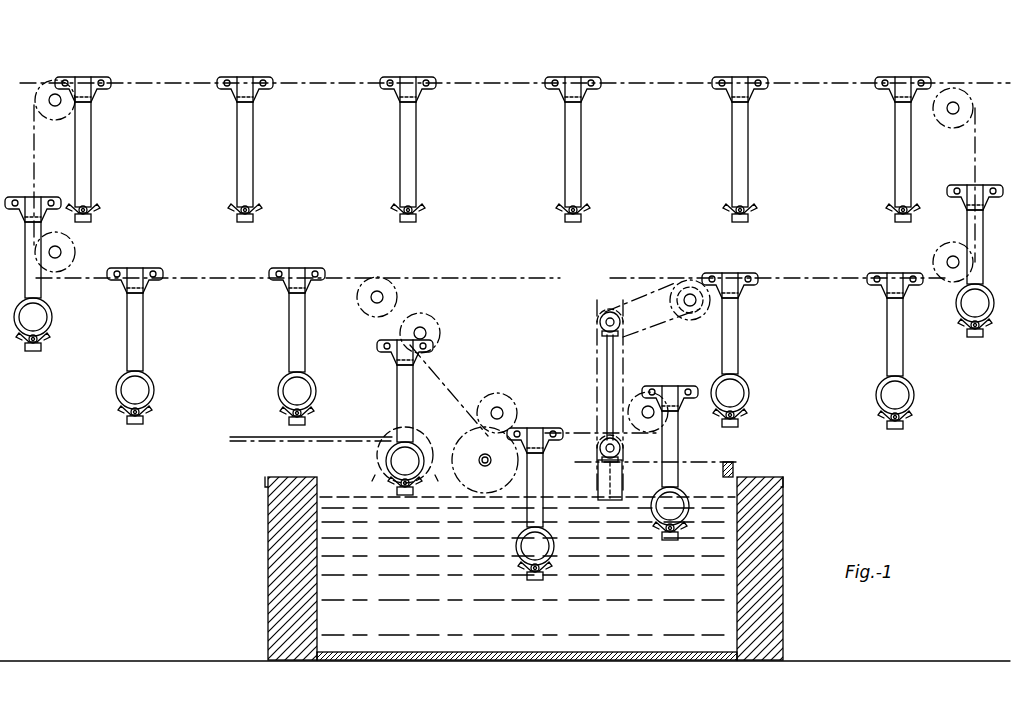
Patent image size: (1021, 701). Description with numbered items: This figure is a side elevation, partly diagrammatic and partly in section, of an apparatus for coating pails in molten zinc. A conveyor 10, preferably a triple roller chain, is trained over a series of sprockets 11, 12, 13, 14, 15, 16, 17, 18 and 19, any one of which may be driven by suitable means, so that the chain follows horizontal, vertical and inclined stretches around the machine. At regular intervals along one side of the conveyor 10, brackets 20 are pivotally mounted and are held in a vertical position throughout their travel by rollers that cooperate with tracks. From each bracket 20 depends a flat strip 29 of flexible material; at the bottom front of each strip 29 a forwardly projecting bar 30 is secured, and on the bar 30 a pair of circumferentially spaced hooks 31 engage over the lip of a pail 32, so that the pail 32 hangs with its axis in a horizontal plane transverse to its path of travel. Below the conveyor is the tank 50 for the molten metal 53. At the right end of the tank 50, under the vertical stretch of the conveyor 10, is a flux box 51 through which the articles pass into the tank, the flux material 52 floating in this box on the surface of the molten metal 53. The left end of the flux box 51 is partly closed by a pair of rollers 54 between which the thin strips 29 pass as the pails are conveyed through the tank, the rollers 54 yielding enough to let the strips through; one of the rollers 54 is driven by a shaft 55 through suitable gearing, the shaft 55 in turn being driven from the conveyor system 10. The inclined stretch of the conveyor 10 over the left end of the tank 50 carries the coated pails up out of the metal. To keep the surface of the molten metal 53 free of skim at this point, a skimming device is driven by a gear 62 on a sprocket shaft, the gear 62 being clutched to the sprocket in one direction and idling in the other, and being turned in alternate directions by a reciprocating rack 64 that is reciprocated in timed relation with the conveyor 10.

The conveyor 10 is at (662, 82).
The sprocket 11 is at (957, 90).
The sprocket 12 is at (946, 278).
The sprocket 13 is at (684, 280).
The sprocket 14 is at (668, 428).
The sprocket 15 is at (505, 395).
The sprocket 16 is at (430, 318).
The sprocket 17 is at (385, 290).
The sprocket 18 is at (60, 243).
The sprocket 19 is at (42, 84).
The bracket 20 is at (96, 100).
The flat strip 29 is at (90, 182).
The bar 30 is at (246, 222).
The hook 31 is at (96, 212).
The pail 32 is at (52, 316).
The tank 50 is at (760, 478).
The flux box 51 is at (730, 462).
The flux material 52 is at (628, 490).
The molten metal 53 is at (334, 504).
The roller 54 is at (622, 462).
The shaft 55 is at (614, 356).
The gear 62 is at (375, 446).
The reciprocating rack 64 is at (255, 436).